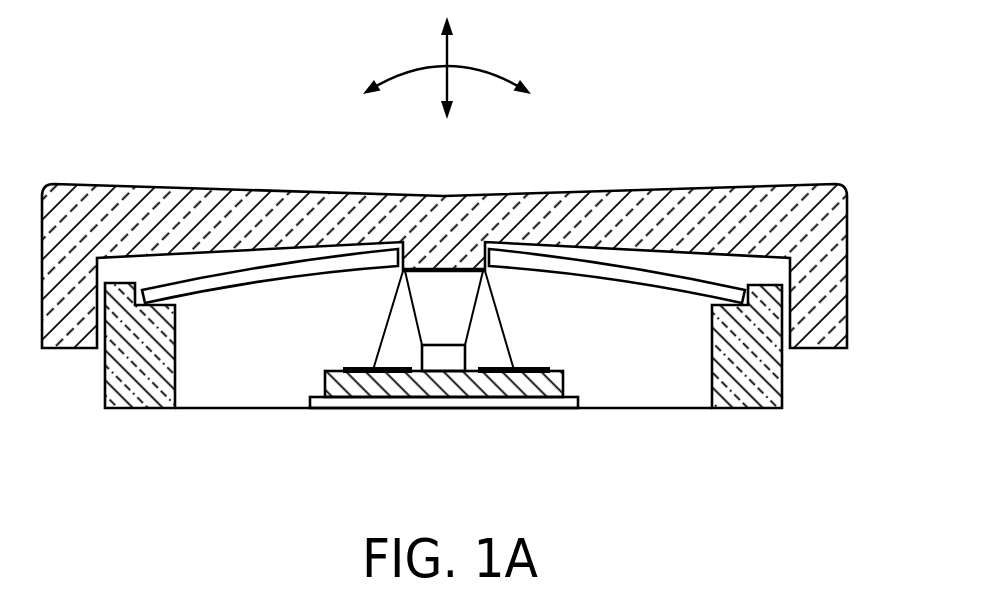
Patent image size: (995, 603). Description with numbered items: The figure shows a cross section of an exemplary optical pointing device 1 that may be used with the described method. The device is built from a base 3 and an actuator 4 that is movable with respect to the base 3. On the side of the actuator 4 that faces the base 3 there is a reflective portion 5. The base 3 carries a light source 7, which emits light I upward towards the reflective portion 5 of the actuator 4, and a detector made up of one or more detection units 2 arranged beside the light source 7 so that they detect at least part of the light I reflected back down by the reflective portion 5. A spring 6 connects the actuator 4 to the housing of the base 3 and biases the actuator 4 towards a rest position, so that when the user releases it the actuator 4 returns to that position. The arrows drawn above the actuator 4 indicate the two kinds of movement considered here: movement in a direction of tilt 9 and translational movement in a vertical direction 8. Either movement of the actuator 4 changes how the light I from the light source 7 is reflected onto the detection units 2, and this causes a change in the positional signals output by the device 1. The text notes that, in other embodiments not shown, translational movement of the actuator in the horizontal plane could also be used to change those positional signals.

The optical pointing device 1 is at (624, 150).
The detection units 2 is at (378, 373).
The base 3 is at (537, 392).
The actuator 4 is at (502, 217).
The reflective portion 5 is at (420, 266).
The spring 6 is at (268, 272).
The light source 7 is at (447, 360).
The vertical direction 8 is at (447, 59).
The direction of tilt 9 is at (455, 78).
The light I is at (468, 297).